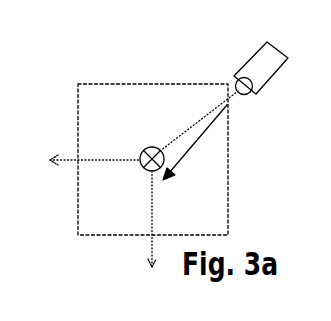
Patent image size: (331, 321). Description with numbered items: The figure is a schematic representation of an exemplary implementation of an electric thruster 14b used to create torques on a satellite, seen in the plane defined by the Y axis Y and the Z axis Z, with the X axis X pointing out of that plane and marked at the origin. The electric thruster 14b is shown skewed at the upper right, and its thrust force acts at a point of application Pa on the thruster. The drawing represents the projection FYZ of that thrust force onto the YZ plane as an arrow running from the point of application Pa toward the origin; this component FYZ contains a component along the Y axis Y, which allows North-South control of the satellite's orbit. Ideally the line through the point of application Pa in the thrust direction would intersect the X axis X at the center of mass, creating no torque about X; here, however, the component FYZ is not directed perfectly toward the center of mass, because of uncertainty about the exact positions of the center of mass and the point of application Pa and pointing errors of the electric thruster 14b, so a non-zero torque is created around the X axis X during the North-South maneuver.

The electric thruster 14b is at (272, 62).
The point of application of the thrust force Pa is at (225, 107).
The X axis X is at (183, 138).
The Y axis Y is at (151, 226).
The Z axis Z is at (88, 160).
The projection of the thrust force onto the plane YZ FYZ is at (195, 150).